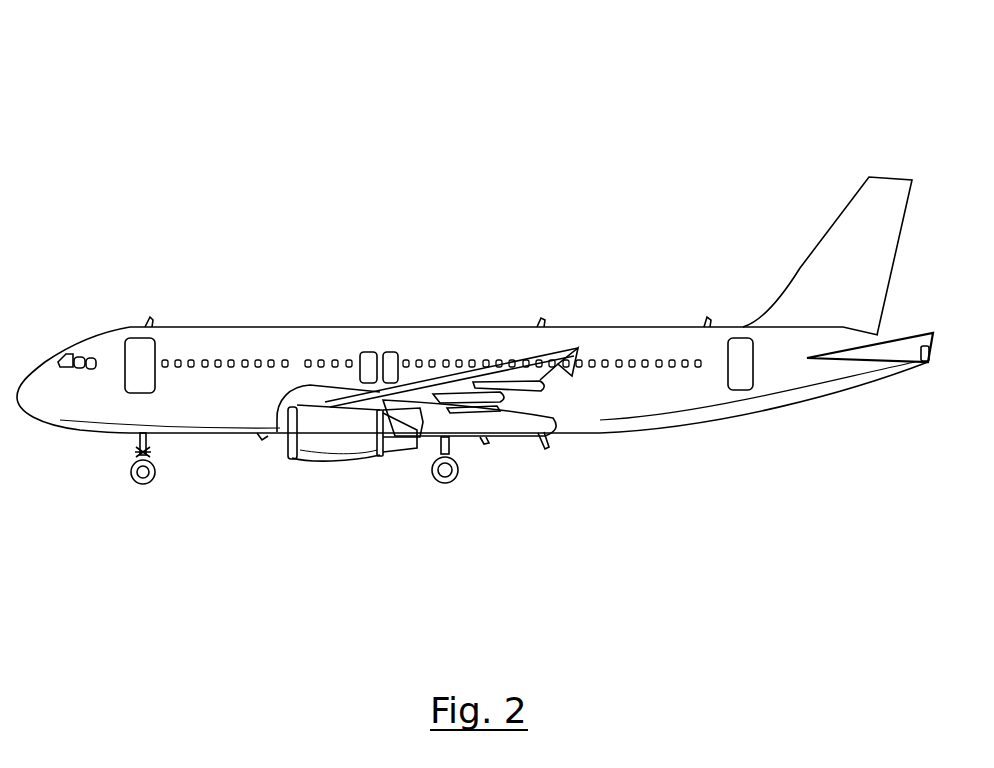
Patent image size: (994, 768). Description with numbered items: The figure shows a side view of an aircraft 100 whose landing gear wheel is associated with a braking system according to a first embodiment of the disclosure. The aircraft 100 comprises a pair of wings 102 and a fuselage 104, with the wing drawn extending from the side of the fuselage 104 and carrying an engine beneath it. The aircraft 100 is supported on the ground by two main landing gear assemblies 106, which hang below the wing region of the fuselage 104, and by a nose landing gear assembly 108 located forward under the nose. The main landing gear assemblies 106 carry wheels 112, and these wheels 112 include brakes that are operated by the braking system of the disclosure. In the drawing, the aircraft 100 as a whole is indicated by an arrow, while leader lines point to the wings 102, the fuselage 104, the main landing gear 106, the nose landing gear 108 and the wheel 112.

The aircraft 100 is at (759, 140).
The wings 102 is at (525, 375).
The fuselage 104 is at (210, 350).
The main landing gear assemblies 106 is at (447, 445).
The nose landing gear assembly 108 is at (143, 472).
The wheels 112 is at (440, 472).